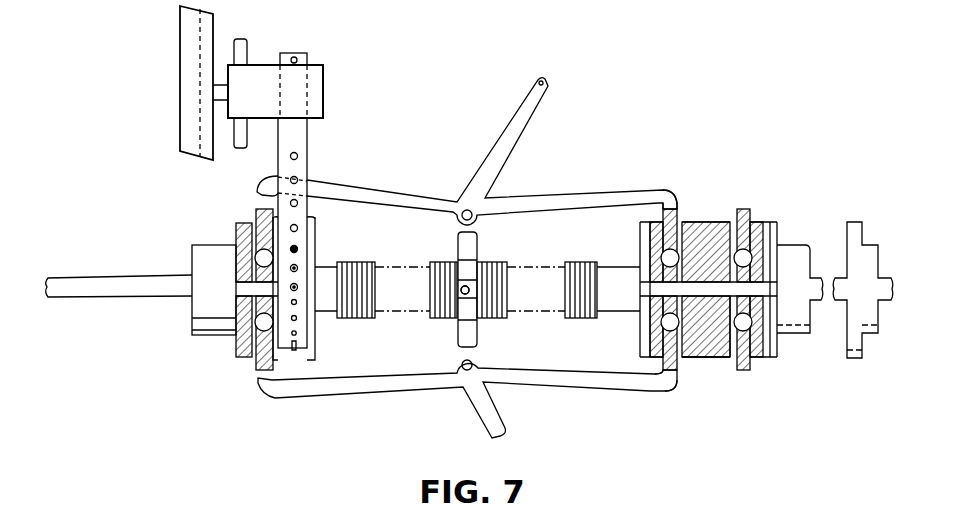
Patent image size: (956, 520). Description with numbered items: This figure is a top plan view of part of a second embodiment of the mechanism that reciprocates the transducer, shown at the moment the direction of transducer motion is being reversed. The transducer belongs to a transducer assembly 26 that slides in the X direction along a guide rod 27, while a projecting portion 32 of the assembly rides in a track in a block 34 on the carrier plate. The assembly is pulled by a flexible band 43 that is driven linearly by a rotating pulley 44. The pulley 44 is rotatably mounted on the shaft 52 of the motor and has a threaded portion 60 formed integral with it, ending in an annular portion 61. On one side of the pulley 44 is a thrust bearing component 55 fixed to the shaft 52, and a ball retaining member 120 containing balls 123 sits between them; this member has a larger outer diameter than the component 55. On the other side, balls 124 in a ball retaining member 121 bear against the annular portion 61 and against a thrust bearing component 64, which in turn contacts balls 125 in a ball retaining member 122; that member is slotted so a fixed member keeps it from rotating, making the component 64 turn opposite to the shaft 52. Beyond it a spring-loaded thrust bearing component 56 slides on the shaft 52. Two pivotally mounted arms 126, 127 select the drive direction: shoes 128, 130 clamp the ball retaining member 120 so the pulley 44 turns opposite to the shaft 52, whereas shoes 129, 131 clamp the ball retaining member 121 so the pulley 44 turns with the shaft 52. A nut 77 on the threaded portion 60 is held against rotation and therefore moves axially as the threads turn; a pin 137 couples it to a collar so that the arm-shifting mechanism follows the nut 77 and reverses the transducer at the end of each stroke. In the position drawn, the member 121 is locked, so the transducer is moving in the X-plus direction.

The transducer assembly 26 is at (324, 96).
The guide rod 27 is at (247, 50).
The projecting portion 32 is at (220, 85).
The block 34 is at (180, 83).
The flexible band 43 is at (306, 60).
The pulley 44 is at (315, 229).
The shaft 52 is at (118, 299).
The thrust bearing component 55 is at (193, 335).
The thrust bearing component 56 is at (778, 336).
The threaded portion 60 is at (482, 263).
The annular portion 61 is at (640, 233).
The thrust bearing component 64 is at (717, 358).
The nut 77 is at (458, 245).
The ball retaining member 120 is at (262, 208).
The ball retaining member 121 is at (676, 217).
The ball retaining member 122 is at (743, 215).
The balls 123 is at (235, 233).
The balls 124 is at (697, 230).
The balls 125 is at (762, 327).
The pivotally mounted arm 126 is at (562, 394).
The pivotally mounted arm 127 is at (517, 197).
The shoe 128 is at (258, 385).
The shoe 129 is at (673, 377).
The shoe 130 is at (268, 179).
The shoe 131 is at (667, 207).
The pin 137 is at (468, 300).